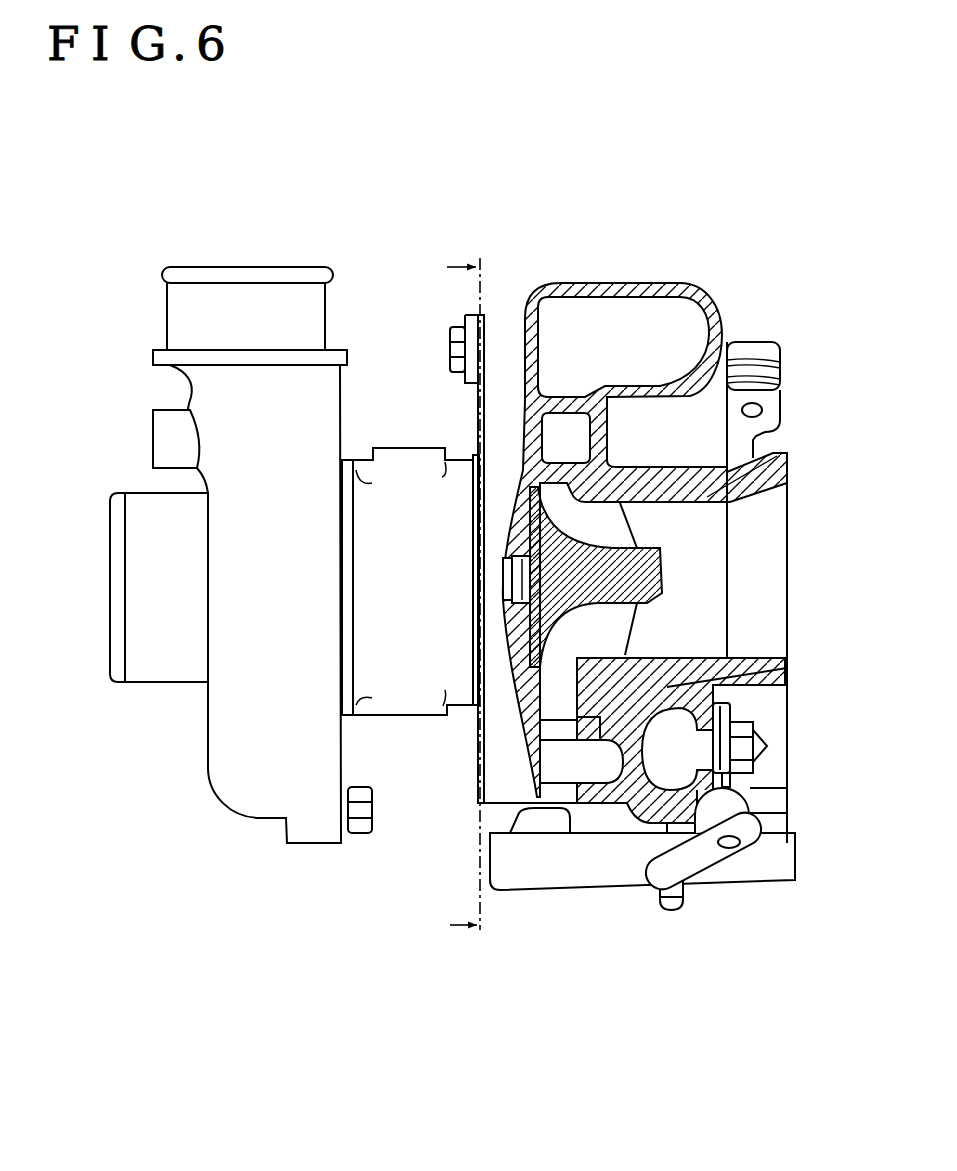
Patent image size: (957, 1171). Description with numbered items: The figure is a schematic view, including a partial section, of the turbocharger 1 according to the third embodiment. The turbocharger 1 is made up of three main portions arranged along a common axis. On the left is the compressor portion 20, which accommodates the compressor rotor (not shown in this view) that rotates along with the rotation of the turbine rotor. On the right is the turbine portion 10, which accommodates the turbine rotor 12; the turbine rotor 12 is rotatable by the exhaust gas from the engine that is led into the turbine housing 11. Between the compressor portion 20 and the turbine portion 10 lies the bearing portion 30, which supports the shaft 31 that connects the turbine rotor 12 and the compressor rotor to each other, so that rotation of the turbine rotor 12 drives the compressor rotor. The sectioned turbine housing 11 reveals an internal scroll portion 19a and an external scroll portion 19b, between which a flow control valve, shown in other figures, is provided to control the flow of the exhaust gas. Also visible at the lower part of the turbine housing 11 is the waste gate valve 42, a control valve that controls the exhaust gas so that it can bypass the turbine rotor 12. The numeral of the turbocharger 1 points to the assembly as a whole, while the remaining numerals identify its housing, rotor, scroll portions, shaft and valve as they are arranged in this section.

The turbocharger 1 is at (393, 240).
The turbine portion 10 is at (666, 275).
The turbine housing 11 is at (787, 463).
The turbine rotor 12 is at (660, 588).
The internal scroll portion 19a is at (563, 430).
The external scroll portion 19b is at (618, 303).
The compressor portion 20 is at (133, 420).
The bearing portion 30 is at (408, 742).
The shaft 31 is at (507, 620).
The waste gate valve 42 is at (763, 745).